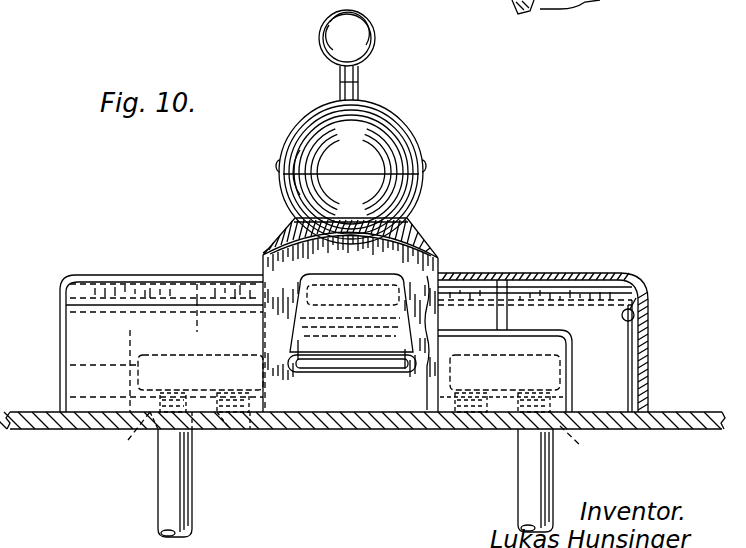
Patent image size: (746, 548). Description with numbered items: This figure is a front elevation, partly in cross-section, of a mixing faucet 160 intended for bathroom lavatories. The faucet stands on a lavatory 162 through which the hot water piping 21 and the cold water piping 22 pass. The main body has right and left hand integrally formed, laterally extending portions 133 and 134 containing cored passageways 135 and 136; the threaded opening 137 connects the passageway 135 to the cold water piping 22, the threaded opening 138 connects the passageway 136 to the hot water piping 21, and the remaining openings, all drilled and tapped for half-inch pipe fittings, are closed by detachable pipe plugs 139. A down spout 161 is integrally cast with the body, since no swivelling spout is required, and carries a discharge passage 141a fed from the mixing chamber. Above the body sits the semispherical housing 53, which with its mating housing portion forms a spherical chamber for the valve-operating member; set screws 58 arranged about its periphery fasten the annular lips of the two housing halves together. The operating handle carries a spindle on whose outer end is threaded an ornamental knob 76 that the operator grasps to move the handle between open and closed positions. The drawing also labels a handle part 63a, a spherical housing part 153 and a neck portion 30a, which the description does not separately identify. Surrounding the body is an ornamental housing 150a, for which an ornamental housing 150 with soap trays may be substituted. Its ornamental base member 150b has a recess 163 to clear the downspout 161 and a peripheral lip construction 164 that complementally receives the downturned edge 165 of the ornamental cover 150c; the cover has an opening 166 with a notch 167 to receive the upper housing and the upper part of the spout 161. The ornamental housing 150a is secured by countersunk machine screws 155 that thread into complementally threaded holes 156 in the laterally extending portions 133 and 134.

The ornamental knob 76 is at (372, 26).
The stem shaft 63a is at (332, 86).
The spherical housing 153 is at (392, 118).
The mixing faucet embodiment 160 is at (427, 139).
The semispherical housing 53 is at (316, 138).
The set screws 58 is at (280, 167).
The flared neck 30a is at (392, 250).
The opening 166 is at (440, 272).
The notch 167 is at (263, 272).
The down spout 161 is at (285, 350).
The discharge passage 141a is at (354, 372).
The ornamental housing 150 is at (161, 343).
The modified ornamental housing 150a is at (650, 350).
The ornamental base member 150b is at (648, 392).
The ornamental cover 150c is at (586, 272).
The downturned edge 165 is at (648, 284).
The peripheral lip construction 164 is at (636, 314).
The countersunk machine screws 155 is at (195, 288).
The recess 163 is at (262, 326).
The left hand integrally formed portion 134 is at (130, 340).
The cored passageway 136 is at (130, 366).
The threaded opening 138 is at (130, 397).
The pipe plugs 139 is at (246, 430).
The threaded holes 156 is at (349, 372).
The right hand integrally formed portion 133 is at (556, 333).
The cored passageway 135 is at (570, 366).
The threaded opening 137 is at (560, 395).
The lavatory 162 is at (46, 430).
The hot water piping 21 is at (185, 489).
The cold water piping 22 is at (520, 459).